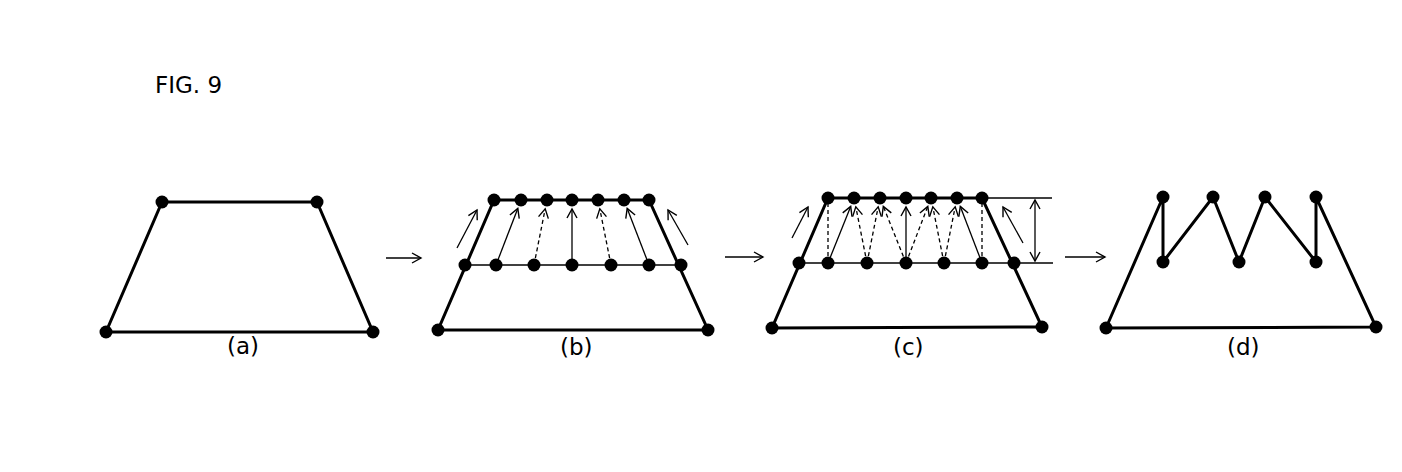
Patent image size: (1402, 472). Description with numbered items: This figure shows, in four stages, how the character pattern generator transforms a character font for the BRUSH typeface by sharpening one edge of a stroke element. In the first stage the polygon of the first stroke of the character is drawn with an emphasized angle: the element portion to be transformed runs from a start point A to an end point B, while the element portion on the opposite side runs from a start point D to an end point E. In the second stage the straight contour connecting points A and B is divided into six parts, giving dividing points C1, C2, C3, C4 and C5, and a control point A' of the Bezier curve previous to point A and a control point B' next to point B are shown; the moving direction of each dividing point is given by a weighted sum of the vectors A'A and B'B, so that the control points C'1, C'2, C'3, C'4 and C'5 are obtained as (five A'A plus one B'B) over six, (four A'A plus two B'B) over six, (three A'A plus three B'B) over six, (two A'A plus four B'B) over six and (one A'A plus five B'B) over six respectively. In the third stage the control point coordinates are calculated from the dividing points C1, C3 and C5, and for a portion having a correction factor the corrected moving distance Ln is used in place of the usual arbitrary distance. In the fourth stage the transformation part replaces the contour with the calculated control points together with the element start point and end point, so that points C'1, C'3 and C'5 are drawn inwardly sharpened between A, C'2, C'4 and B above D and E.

The start point A is at (653, 190).
The end point B is at (825, 190).
The start point of opposite element portion D is at (884, 341).
The end point of opposite element portion E is at (597, 342).
The dividing point C1 is at (685, 188).
The dividing point C2 is at (547, 194).
The dividing point C3 is at (737, 188).
The dividing point C4 is at (598, 194).
The dividing point C5 is at (788, 188).
The control point A' is at (620, 275).
The control point B' is at (863, 274).
The control point C'1 is at (831, 277).
The control point C'2 is at (874, 243).
The control point C'3 is at (908, 277).
The control point C'4 is at (938, 243).
The control point C'5 is at (988, 277).
The corrected moving distance Ln is at (1052, 230).